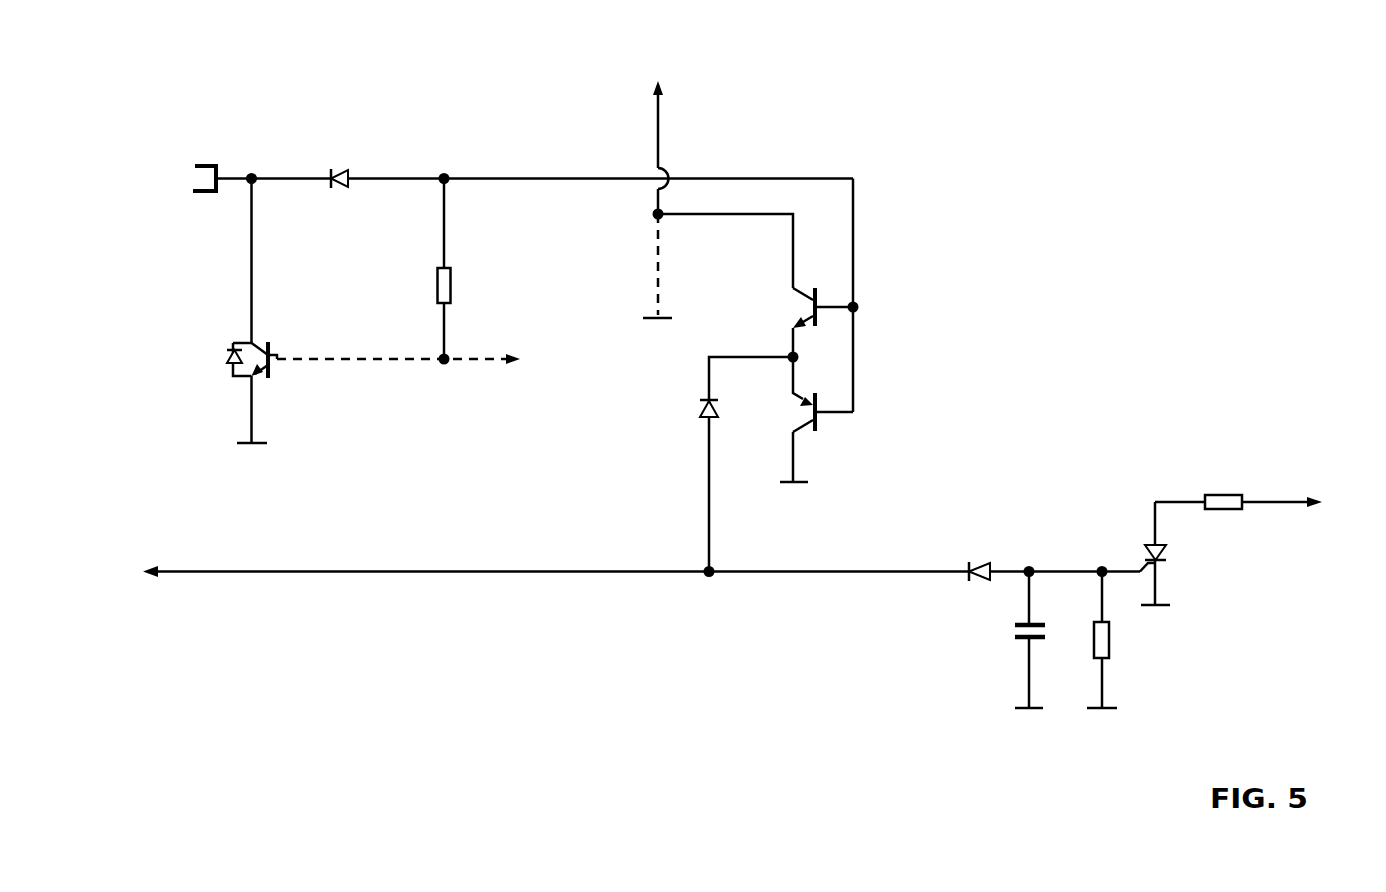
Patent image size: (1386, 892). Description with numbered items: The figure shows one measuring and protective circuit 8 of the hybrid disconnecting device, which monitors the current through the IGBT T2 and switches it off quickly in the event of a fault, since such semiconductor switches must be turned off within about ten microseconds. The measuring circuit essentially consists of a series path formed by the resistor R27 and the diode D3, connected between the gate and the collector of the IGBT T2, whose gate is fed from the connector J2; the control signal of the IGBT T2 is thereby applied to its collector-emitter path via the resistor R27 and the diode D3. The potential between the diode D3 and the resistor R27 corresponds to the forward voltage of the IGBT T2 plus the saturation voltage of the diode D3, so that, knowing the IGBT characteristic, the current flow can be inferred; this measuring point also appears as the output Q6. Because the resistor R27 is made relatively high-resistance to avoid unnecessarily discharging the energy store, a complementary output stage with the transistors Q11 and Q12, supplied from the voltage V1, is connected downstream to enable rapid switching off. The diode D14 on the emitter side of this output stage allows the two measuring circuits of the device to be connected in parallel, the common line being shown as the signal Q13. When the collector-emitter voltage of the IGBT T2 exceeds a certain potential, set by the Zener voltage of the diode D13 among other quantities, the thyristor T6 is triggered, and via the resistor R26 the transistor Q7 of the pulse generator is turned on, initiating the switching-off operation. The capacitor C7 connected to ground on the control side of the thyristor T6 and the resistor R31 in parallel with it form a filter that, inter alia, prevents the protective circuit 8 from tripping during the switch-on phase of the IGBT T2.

The measuring and protective circuit 8 is at (1026, 163).
The connector J2 is at (206, 163).
The diode D3 is at (337, 162).
The resistor R27 is at (417, 269).
The IGBT T2 is at (232, 311).
The signal Q6 is at (398, 341).
The supply voltage V1 is at (657, 127).
The transistor Q12 is at (802, 325).
The transistor Q11 is at (799, 419).
The diode D14 is at (718, 464).
The signal Q13 is at (556, 553).
The diode D13 is at (1049, 551).
The capacitor C7 is at (1009, 640).
The resistor R31 is at (1124, 640).
The thyristor T6 is at (1170, 553).
The resistor R26 is at (1200, 484).
The transistor Q7 is at (1282, 486).